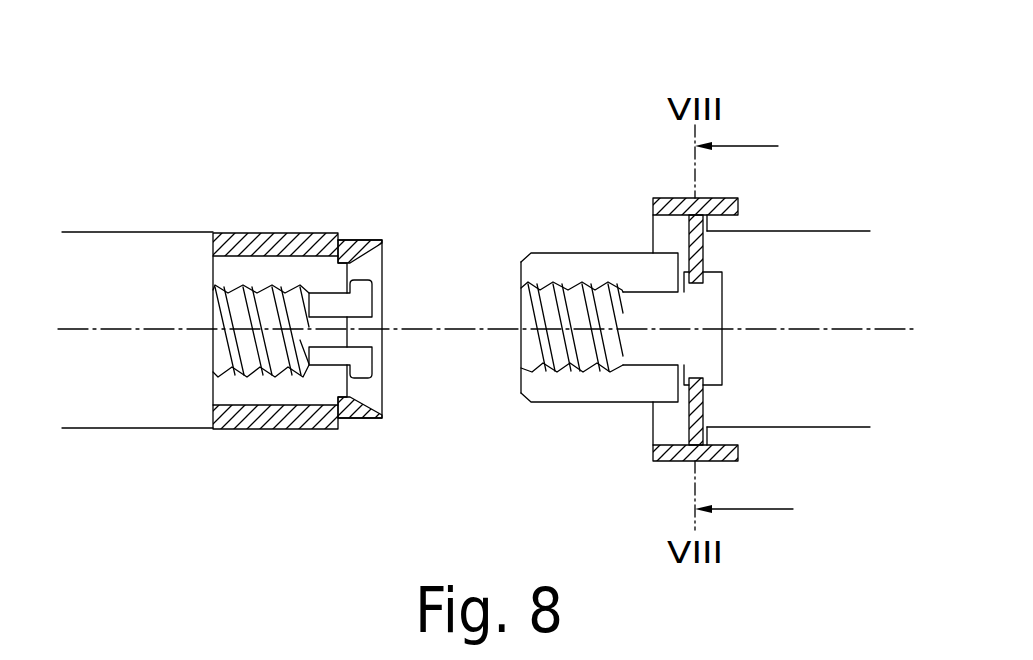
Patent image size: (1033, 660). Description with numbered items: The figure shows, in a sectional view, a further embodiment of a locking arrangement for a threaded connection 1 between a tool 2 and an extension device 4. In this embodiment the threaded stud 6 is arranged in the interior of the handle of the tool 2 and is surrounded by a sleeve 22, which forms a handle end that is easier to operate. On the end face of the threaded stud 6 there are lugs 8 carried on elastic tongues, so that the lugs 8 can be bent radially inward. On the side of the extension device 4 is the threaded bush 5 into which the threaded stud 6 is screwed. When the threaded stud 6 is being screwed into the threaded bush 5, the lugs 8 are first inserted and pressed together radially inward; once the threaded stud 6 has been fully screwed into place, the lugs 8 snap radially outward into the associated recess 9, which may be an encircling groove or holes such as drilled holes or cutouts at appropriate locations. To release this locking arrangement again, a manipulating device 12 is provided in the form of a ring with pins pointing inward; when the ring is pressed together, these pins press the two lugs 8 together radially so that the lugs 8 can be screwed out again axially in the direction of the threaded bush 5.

The threaded connection 1 is at (451, 136).
The tool 2 is at (181, 176).
The extension device 4 is at (816, 154).
The threaded bush 5 is at (552, 308).
The threaded stud 6 is at (230, 305).
The lugs 8 is at (368, 284).
The recess 9 is at (710, 305).
The manipulating device 12 is at (672, 182).
The sleeve 22 is at (283, 245).